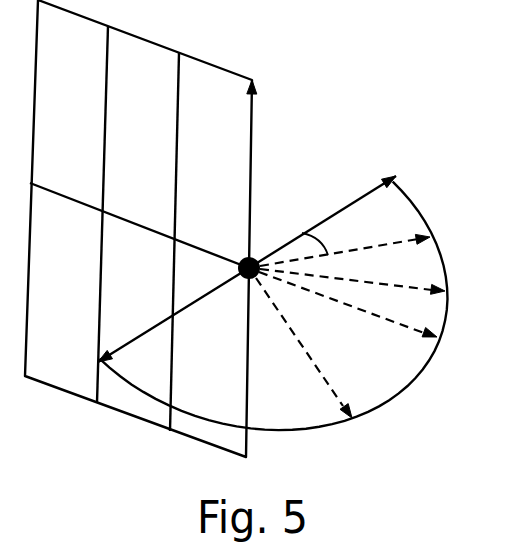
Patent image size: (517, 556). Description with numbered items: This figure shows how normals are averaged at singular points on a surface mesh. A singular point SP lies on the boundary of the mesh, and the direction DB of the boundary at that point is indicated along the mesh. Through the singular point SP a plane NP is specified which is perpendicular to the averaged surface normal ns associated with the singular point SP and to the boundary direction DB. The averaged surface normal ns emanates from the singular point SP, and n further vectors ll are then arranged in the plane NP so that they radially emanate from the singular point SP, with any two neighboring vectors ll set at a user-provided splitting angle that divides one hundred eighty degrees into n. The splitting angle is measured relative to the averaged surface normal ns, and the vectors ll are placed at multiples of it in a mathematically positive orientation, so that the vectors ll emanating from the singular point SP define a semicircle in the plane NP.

The direction of the boundary DB is at (258, 87).
The singular point SP is at (241, 278).
The averaged surface normal ns is at (372, 190).
The further vectors ll is at (405, 241).
The plane NP is at (429, 362).